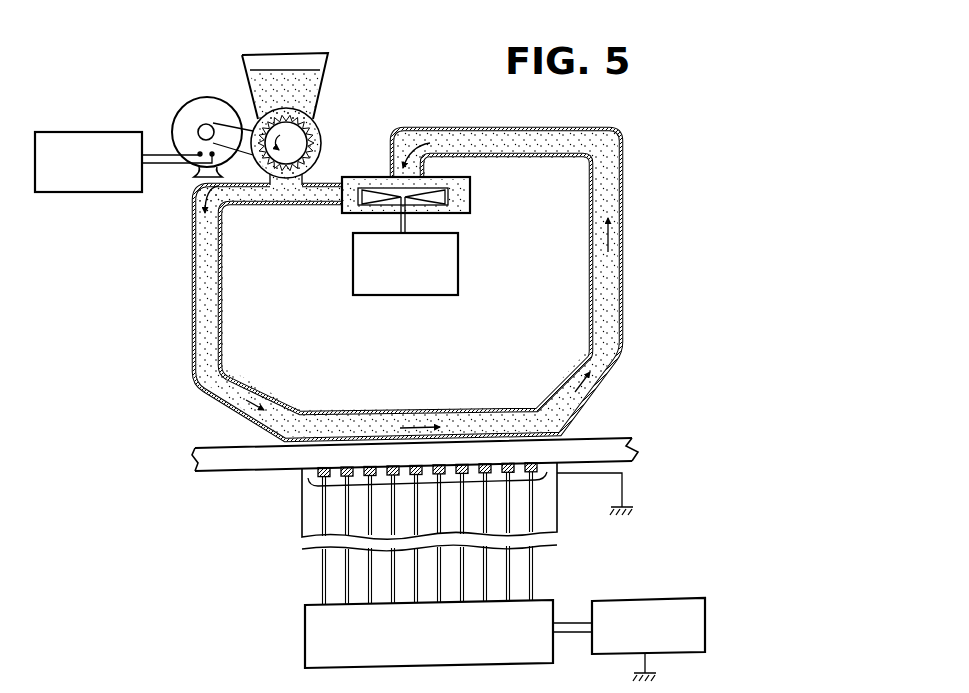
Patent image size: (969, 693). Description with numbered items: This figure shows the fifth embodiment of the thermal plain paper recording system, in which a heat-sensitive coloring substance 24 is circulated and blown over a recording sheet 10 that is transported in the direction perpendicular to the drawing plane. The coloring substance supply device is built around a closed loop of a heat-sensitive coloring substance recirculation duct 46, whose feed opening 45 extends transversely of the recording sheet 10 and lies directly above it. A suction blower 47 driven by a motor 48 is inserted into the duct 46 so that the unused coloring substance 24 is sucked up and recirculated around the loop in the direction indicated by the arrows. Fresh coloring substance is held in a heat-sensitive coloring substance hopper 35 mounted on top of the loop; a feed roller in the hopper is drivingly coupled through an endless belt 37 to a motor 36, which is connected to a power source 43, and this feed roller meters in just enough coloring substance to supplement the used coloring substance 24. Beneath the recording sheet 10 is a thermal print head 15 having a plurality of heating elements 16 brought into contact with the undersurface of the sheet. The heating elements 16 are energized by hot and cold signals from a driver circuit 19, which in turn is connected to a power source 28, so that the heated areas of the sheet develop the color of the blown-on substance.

The recording sheet 10 is at (633, 447).
The thermal print head 15 is at (552, 495).
The heating elements 16 is at (427, 534).
The driver circuit 19 is at (317, 632).
The heat-sensitive coloring substance 24 is at (302, 95).
The power source 28 is at (645, 601).
The heat-sensitive coloring substance hopper 35 is at (330, 64).
The motor 36 is at (208, 98).
The endless belt 37 is at (295, 137).
The power source 43 is at (93, 131).
The feed opening 45 is at (362, 413).
The heat-sensitive coloring substance recirculation duct 46 is at (593, 277).
The suction blower 47 is at (460, 193).
The motor 48 is at (460, 252).